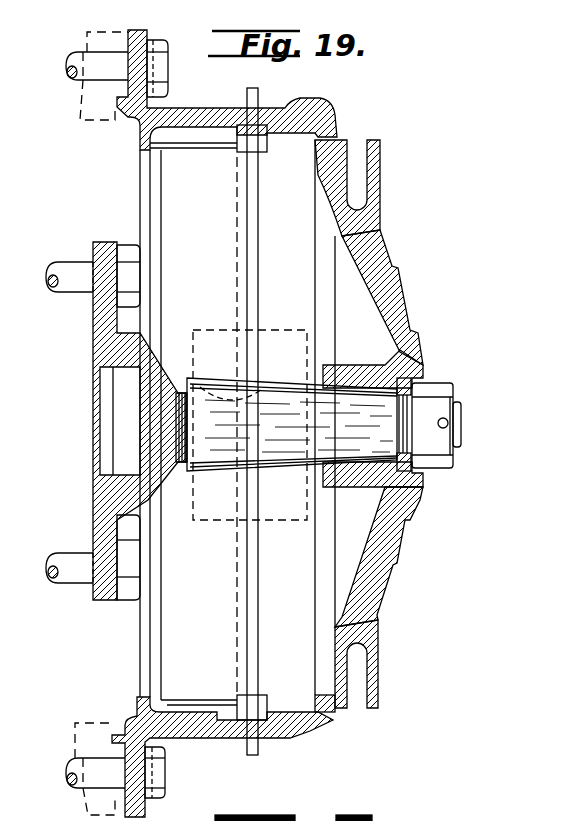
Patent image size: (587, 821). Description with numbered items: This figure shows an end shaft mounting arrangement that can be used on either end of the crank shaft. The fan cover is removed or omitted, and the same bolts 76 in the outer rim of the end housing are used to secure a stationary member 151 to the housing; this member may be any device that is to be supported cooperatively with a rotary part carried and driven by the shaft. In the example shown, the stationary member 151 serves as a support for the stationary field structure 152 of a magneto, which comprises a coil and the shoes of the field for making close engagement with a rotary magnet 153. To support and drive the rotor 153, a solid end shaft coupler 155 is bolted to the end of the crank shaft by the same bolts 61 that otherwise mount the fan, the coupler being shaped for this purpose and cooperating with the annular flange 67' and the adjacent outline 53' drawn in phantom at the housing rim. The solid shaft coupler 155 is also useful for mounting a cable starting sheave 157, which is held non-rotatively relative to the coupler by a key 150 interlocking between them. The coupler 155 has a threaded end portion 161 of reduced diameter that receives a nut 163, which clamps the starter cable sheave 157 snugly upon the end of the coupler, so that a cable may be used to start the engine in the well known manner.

The bolts 76 is at (164, 66).
The stationary member 151 is at (181, 108).
The hidden bracket 53' is at (101, 423).
The stationary field structure 152 is at (256, 176).
The cable starting sheave 157 is at (378, 243).
The bolts 61 is at (74, 268).
The rotary magnet 153 is at (227, 330).
The solid end shaft coupler 155 is at (268, 446).
The key 150 is at (363, 463).
The threaded end portion 161 is at (461, 423).
The nut 163 is at (438, 459).
The flange plate 67' is at (131, 437).